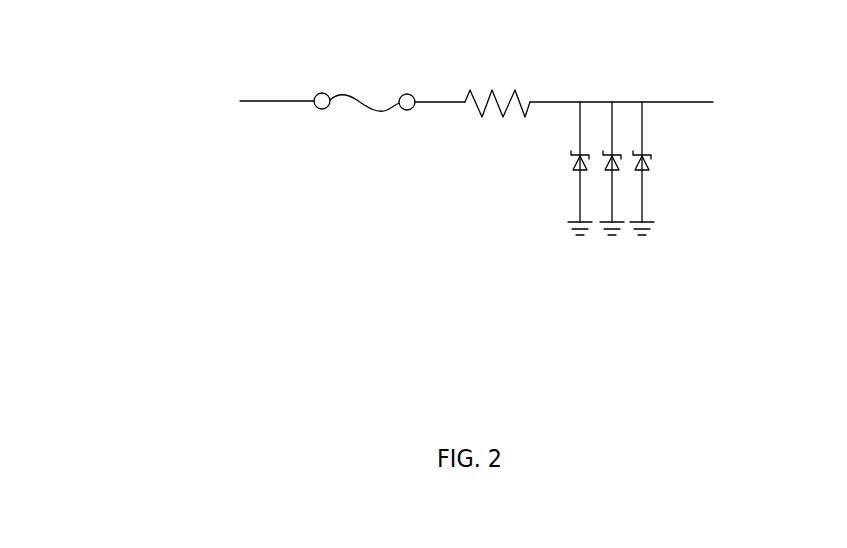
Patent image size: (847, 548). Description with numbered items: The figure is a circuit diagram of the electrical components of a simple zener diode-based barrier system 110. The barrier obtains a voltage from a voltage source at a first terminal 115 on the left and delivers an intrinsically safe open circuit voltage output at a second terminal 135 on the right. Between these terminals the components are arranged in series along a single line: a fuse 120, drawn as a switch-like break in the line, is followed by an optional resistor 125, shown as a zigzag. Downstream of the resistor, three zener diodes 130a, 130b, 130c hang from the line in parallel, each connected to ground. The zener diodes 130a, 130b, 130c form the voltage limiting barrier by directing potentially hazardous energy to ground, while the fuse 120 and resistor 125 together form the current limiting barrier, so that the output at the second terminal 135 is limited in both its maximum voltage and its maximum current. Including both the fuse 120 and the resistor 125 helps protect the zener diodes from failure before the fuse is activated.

The zener diode-based barrier system 110 is at (150, 205).
The first terminal 115 is at (223, 112).
The fuse 120 is at (358, 129).
The resistor 125 is at (514, 77).
The zener diode 130a is at (671, 167).
The zener diode 130b is at (632, 183).
The zener diode 130c is at (557, 178).
The second terminal 135 is at (727, 96).